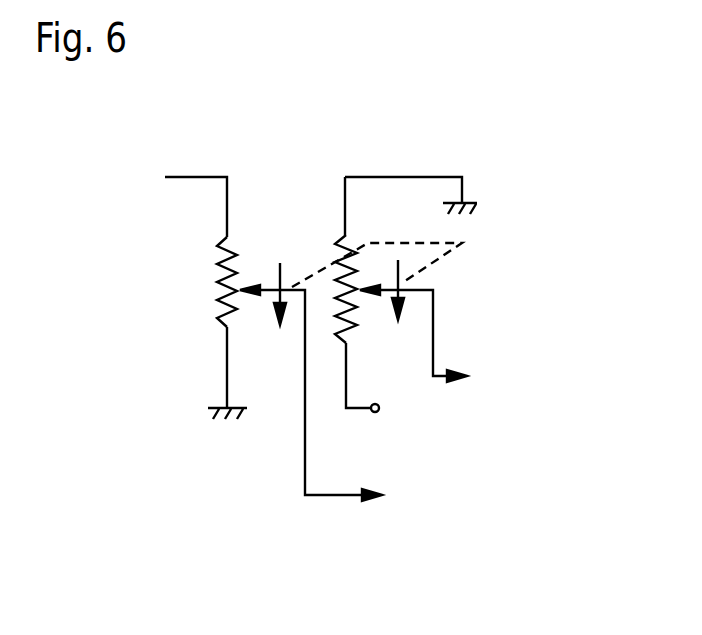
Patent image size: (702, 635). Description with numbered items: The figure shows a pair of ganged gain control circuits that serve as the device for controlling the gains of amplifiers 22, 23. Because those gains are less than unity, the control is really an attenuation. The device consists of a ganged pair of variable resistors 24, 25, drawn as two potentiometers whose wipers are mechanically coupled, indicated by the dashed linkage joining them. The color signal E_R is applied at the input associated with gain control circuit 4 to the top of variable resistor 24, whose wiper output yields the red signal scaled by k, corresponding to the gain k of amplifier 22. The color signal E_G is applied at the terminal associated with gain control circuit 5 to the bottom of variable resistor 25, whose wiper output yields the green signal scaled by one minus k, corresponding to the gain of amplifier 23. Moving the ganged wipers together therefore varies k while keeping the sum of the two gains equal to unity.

The gain control circuit 4 is at (185, 183).
The gain control circuit 5 is at (379, 409).
The amplifier 22 is at (316, 152).
The amplifier 23 is at (346, 258).
The variable resistor 24 is at (218, 287).
The variable resistor 25 is at (337, 256).